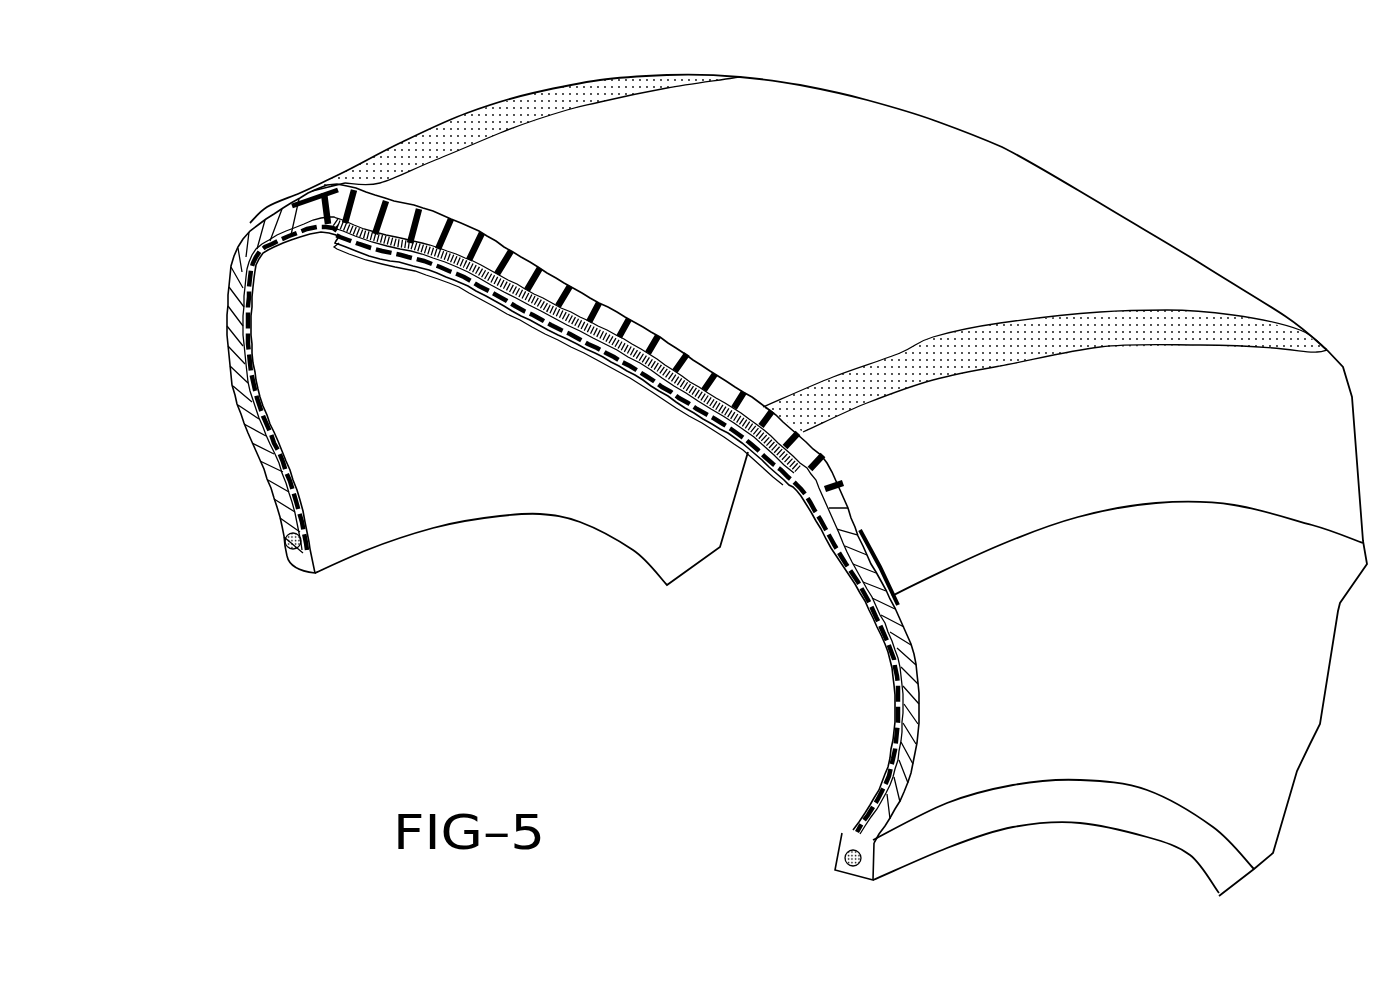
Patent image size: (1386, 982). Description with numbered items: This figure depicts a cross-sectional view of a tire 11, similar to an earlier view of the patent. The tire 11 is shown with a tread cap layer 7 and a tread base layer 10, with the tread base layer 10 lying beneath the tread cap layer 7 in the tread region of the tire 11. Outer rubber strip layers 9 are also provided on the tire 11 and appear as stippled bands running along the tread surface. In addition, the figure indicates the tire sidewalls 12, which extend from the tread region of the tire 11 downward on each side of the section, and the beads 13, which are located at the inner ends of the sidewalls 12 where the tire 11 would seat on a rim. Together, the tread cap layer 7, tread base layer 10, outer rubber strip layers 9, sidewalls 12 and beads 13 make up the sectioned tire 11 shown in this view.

The tread cap layer 7 is at (337, 208).
The outer rubber strip layers 9 is at (408, 128).
The tread base layer 10 is at (430, 247).
The tire 11 is at (1201, 192).
The tire sidewalls 12 is at (236, 275).
The beads 13 is at (283, 545).